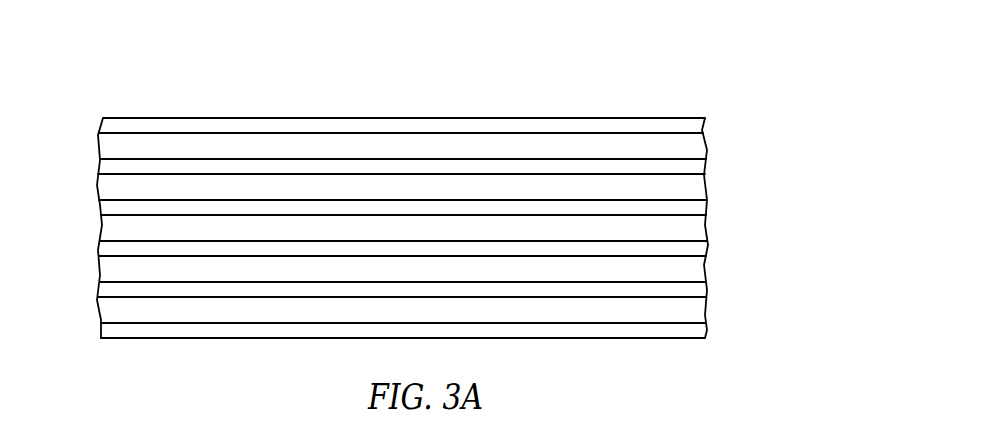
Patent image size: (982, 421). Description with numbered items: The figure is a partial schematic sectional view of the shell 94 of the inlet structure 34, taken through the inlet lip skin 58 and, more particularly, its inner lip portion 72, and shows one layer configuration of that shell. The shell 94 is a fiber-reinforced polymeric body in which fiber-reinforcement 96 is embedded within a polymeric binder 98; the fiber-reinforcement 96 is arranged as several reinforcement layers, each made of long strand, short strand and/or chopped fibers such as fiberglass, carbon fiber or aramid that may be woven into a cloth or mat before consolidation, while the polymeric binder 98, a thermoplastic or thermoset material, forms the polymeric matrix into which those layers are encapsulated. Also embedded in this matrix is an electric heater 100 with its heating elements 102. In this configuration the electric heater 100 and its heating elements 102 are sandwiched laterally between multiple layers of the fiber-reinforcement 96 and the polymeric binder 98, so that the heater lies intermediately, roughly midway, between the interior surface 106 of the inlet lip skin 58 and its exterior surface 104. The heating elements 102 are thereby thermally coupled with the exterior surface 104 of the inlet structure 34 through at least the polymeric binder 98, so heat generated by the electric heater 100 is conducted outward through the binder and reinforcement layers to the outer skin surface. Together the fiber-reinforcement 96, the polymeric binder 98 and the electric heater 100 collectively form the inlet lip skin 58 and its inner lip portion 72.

The inlet structure 34 is at (472, 175).
The inlet lip skin 58 is at (472, 175).
The inner lip portion 72 is at (472, 175).
The shell 94 is at (726, 89).
The fiber-reinforcement 96 is at (688, 141).
The polymeric binder 98 is at (110, 206).
The electric heater 100 is at (470, 222).
The heating elements 102 is at (688, 227).
The exterior surface 104 is at (658, 117).
The interior surface 106 is at (662, 338).